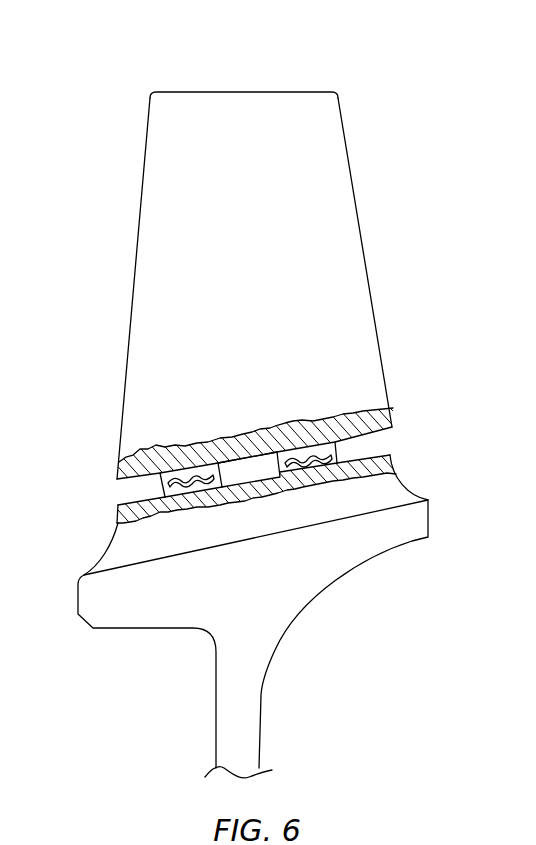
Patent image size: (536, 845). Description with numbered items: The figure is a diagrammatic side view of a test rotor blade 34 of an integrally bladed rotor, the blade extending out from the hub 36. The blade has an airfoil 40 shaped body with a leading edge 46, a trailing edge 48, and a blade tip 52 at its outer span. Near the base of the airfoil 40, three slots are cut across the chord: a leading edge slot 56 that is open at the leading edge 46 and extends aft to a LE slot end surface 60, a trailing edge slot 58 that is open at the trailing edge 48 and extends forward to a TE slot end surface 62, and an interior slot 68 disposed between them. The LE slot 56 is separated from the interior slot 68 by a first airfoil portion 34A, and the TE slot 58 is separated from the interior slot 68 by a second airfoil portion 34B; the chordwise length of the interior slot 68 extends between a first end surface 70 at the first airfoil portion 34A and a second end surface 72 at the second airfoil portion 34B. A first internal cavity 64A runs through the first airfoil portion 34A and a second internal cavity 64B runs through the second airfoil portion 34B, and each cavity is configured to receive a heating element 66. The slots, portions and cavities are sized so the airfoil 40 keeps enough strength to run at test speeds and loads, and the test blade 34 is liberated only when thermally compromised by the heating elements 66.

The rotor blade 34 is at (427, 91).
The hub 36 is at (122, 613).
The airfoil 40 is at (231, 206).
The leading edge 46 is at (130, 303).
The trailing edge 48 is at (373, 283).
The blade tip 52 is at (301, 92).
The leading edge slot 56 is at (103, 504).
The trailing edge slot 58 is at (405, 448).
The LE slot end surface 60 is at (144, 460).
The TE slot end surface 62 is at (352, 424).
The first internal cavity 64A is at (192, 476).
The second internal cavity 64B is at (303, 457).
The heating element 66 is at (180, 490).
The interior slot 68 is at (248, 478).
The first end surface 70 is at (219, 462).
The second end surface 72 is at (257, 451).
The first airfoil portion 34A is at (161, 487).
The second airfoil portion 34B is at (338, 450).